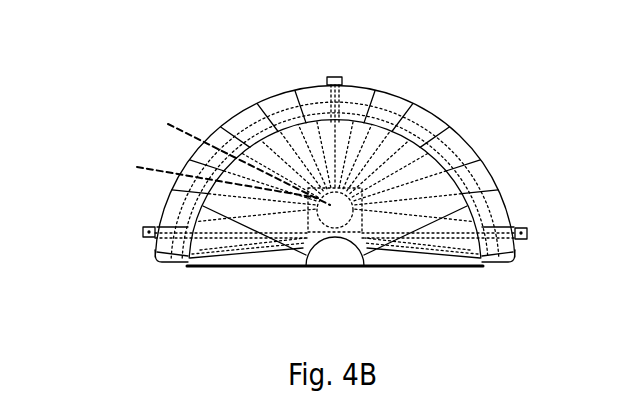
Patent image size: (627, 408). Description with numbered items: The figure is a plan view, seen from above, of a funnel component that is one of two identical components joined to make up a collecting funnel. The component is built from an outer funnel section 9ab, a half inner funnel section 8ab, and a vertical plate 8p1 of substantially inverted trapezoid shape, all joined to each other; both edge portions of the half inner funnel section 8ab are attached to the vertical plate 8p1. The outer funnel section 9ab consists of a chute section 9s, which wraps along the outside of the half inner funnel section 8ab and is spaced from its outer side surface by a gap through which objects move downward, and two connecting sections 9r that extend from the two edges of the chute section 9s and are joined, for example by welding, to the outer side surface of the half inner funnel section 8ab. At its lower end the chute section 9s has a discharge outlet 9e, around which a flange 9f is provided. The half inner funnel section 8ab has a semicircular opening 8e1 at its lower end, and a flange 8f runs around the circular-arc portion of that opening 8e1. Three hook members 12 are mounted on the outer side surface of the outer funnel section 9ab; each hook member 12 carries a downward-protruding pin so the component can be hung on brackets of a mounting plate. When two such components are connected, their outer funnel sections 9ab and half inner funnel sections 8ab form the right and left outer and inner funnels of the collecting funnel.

The hook member 12 is at (328, 79).
The half inner funnel section 8ab is at (350, 121).
The chute section 9s is at (430, 112).
The outer funnel section 9ab is at (465, 137).
The flange 9f is at (236, 155).
The discharge outlet 9e is at (214, 175).
The connecting section 9r is at (168, 263).
The flange 8f is at (270, 252).
The vertical plate 8p1 is at (320, 258).
The semicircular opening 8e1 is at (343, 258).